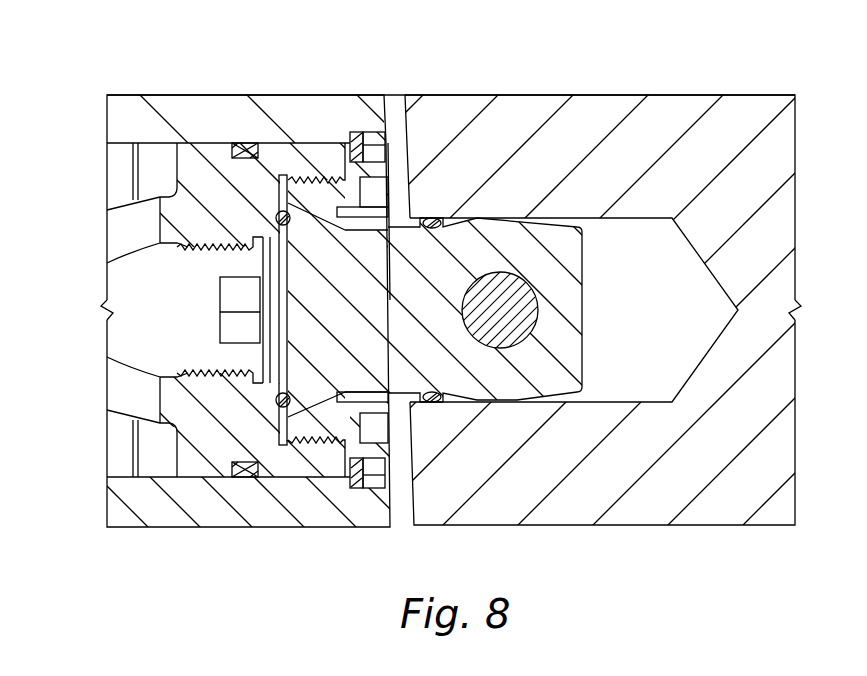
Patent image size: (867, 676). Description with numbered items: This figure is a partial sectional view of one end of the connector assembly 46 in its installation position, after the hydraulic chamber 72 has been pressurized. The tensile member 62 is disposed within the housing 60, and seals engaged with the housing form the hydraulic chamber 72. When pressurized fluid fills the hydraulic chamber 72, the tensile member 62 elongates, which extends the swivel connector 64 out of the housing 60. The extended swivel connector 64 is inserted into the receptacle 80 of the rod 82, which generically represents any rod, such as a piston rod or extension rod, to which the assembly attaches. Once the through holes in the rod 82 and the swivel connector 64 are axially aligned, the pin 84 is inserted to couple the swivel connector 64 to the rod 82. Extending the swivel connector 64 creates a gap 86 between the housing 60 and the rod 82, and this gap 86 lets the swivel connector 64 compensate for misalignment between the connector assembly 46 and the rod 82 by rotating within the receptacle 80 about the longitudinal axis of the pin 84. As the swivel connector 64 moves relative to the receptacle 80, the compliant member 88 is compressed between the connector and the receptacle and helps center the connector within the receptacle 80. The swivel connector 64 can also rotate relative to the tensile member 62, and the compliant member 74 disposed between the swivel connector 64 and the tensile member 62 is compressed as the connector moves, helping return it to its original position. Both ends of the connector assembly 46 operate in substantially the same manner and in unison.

The connector assembly 46 is at (114, 44).
The housing 60 is at (203, 120).
The tensile member 62 is at (182, 221).
The swivel connector 64 is at (545, 362).
The hydraulic chamber 72 is at (148, 458).
The compliant member 74 is at (288, 418).
The receptacle 80 is at (635, 224).
The rod 82 is at (666, 120).
The pin 84 is at (500, 311).
The gap 86 is at (386, 100).
The compliant member 88 is at (431, 404).